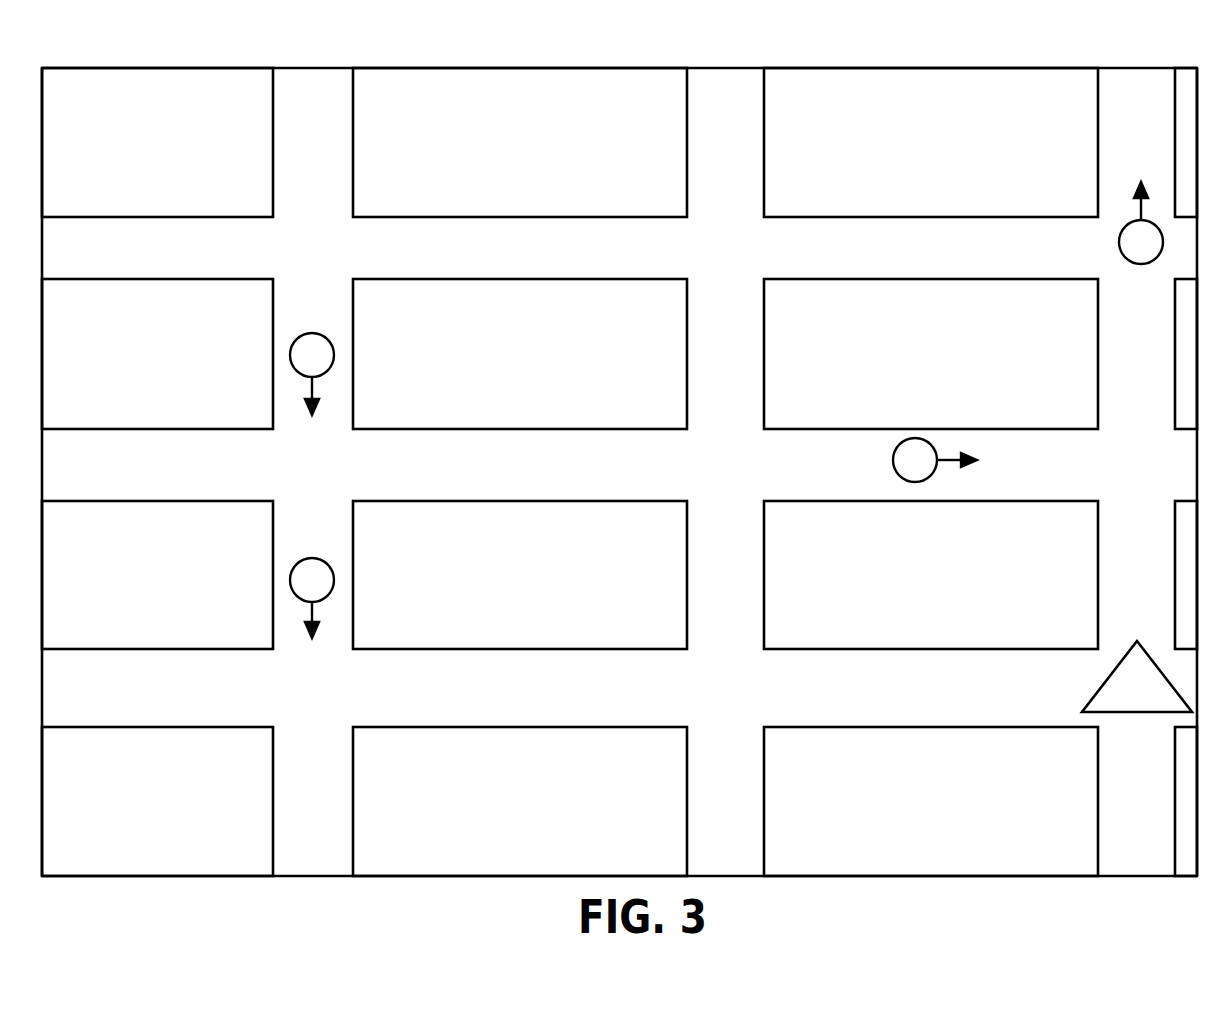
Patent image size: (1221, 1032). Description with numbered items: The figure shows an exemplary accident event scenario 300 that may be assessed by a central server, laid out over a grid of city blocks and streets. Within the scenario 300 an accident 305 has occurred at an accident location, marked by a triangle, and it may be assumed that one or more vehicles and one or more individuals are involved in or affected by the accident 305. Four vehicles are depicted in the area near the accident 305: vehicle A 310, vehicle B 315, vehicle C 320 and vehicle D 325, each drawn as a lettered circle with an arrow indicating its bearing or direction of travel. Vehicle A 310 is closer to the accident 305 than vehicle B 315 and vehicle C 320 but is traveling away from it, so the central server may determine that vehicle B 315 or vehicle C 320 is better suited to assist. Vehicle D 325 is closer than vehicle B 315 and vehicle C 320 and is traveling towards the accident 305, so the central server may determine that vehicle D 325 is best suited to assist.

The accident event scenario 300 is at (600, 67).
The accident 305 is at (1131, 641).
The vehicle A 310 is at (1149, 265).
The vehicle B 315 is at (305, 558).
The vehicle C 320 is at (305, 333).
The vehicle D 325 is at (893, 460).